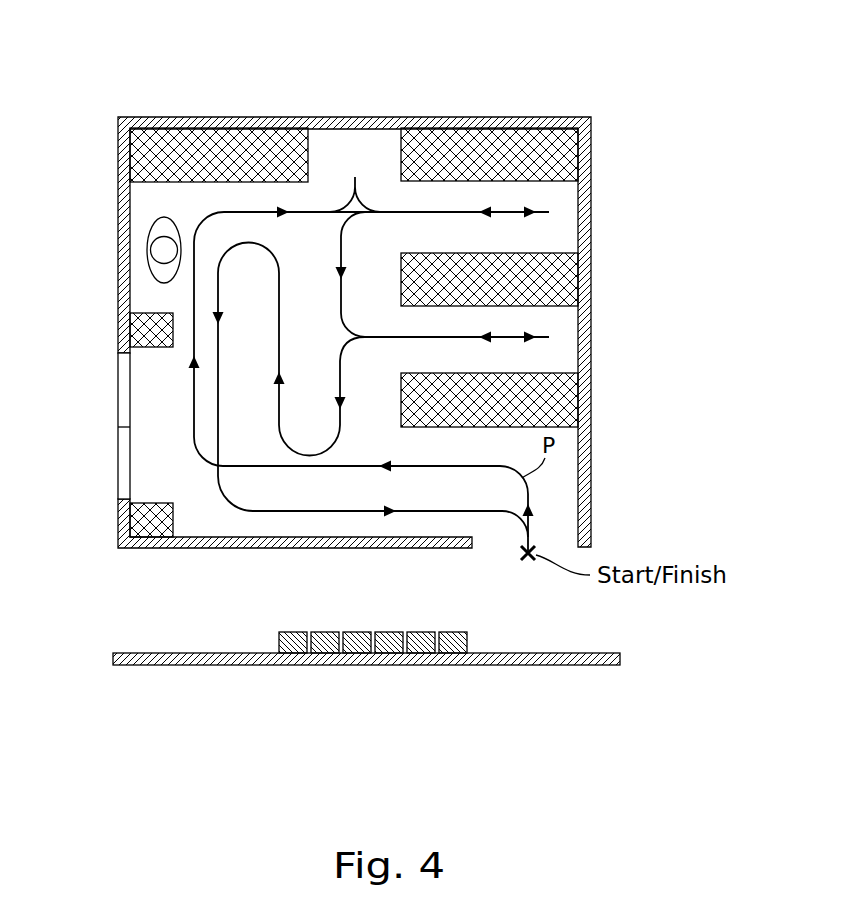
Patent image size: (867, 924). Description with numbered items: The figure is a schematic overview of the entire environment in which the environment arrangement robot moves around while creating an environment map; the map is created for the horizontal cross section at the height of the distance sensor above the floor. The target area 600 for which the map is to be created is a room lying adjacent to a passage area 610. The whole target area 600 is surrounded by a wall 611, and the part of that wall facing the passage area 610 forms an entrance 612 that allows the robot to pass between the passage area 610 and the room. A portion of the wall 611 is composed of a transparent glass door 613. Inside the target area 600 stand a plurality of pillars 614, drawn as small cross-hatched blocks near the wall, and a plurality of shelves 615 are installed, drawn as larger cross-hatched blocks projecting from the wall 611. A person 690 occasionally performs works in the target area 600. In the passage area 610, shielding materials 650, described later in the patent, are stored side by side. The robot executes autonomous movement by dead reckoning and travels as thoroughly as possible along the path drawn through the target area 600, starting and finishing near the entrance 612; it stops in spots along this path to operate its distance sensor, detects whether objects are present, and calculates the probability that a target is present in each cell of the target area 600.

The target area 600 is at (128, 81).
The passage area 610 is at (163, 627).
The wall 611 is at (585, 466).
The entrance 612 is at (489, 549).
The transparent glass door 613 is at (122, 437).
The pillar 614 is at (137, 327).
The shelf 615 is at (262, 135).
The shielding material 650 is at (455, 664).
The person 690 is at (141, 243).